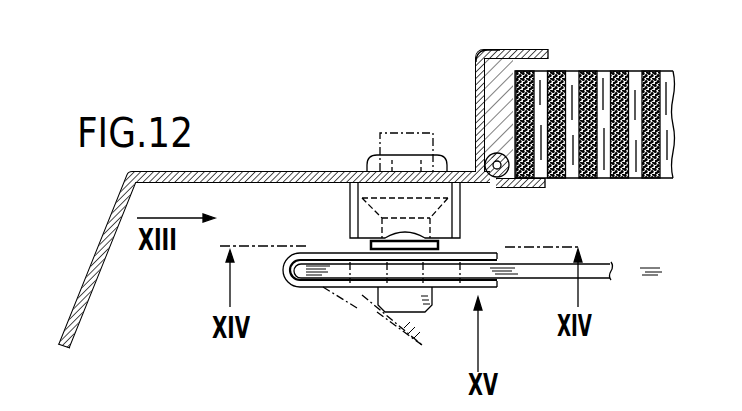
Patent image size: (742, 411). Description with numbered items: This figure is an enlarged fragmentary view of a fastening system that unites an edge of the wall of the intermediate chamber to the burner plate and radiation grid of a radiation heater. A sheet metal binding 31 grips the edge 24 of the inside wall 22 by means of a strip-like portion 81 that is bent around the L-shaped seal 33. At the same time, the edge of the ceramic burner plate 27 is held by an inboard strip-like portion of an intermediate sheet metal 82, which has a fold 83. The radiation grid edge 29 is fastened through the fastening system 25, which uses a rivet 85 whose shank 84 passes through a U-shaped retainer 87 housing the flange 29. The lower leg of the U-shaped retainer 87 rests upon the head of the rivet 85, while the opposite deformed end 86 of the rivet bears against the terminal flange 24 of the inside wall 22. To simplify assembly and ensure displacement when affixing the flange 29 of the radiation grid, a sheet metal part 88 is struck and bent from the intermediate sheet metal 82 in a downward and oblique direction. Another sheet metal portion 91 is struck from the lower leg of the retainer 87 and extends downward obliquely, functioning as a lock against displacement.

The inside wall 22 is at (96, 279).
The edge of the inside wall 24 is at (240, 170).
The fastening system 25 is at (402, 272).
The ceramic burner plate 27 is at (653, 66).
The radiation grid edge 29 is at (533, 277).
The sheet metal binding 31 is at (477, 115).
The L-shaped seal 33 is at (480, 61).
The strip-like portion 81 is at (533, 50).
The intermediate sheet metal 82 is at (480, 186).
The fold 83 is at (530, 165).
The rivet shank 84 is at (366, 300).
The rivet 85 is at (424, 298).
The deformed end of the rivet 86 is at (372, 164).
The U-shaped retainer 87 is at (287, 287).
The sheet metal part 88 is at (365, 208).
The sheet metal portion 91 is at (340, 300).